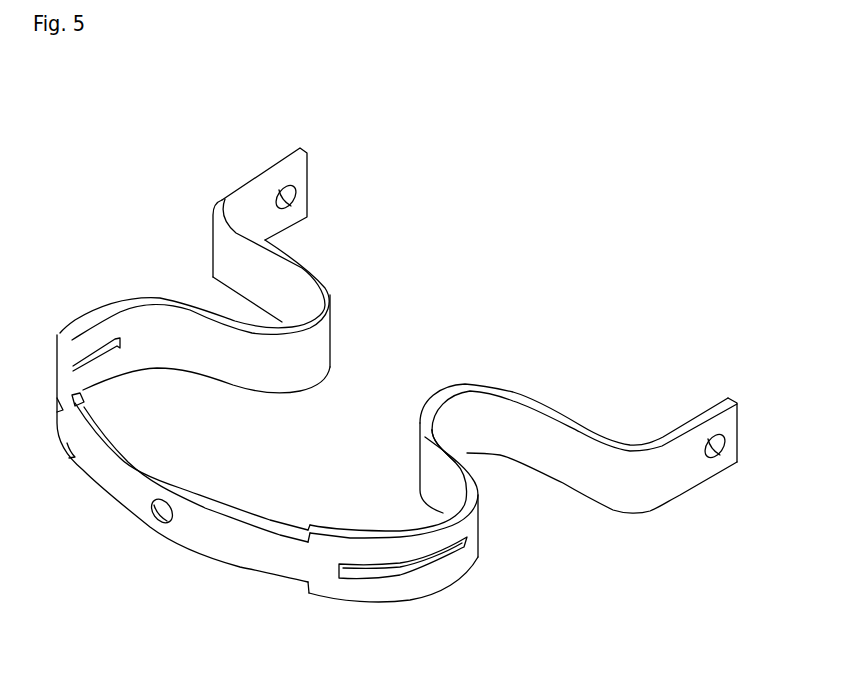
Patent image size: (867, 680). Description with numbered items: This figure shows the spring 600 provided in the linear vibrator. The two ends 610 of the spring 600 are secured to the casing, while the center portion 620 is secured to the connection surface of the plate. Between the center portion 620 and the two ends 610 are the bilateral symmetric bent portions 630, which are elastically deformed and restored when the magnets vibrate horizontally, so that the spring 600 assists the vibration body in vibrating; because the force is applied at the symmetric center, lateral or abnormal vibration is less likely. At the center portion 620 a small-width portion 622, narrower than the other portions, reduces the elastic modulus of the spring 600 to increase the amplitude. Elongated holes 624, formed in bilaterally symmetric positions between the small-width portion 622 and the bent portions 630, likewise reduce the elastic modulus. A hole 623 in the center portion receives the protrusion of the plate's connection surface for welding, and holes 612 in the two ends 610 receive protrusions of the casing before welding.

The spring 600 is at (140, 144).
The two ends 610 is at (298, 172).
The holes 612 is at (290, 198).
The center portion 620 is at (133, 498).
The small-width portion 622 is at (189, 534).
The hole 623 is at (157, 517).
The elongated holes 624 is at (427, 567).
The bilateral symmetric bent portions 630 is at (323, 302).